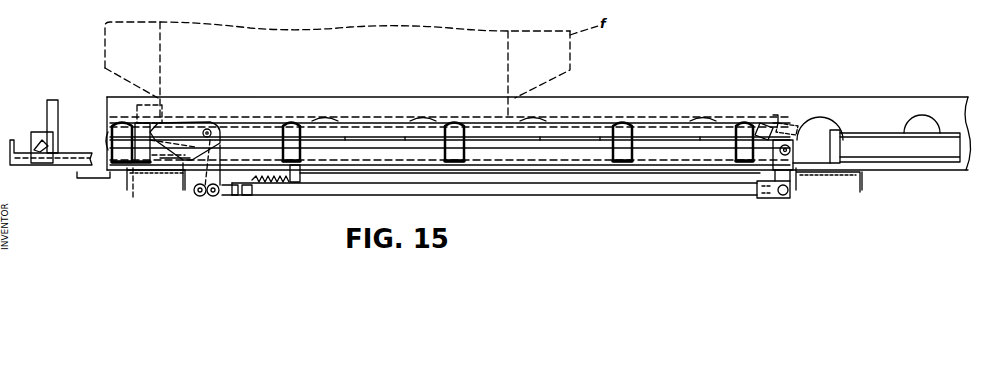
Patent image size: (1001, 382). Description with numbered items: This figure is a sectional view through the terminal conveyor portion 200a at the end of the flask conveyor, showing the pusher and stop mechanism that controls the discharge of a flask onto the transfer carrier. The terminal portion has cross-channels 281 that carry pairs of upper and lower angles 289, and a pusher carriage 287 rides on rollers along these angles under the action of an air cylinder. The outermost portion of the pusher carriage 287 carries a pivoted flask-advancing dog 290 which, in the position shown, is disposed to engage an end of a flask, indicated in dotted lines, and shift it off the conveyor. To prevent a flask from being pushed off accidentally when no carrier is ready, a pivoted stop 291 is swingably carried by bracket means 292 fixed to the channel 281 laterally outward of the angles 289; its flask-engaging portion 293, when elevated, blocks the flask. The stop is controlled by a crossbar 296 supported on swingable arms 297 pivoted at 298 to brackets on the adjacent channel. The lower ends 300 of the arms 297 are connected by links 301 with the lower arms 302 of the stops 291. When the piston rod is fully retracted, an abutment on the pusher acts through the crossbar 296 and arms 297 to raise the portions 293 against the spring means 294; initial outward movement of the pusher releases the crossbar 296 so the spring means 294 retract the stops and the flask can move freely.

The terminal conveyor portion 200a is at (318, 94).
The cross-channels 281 is at (150, 173).
The pusher carriage 287 is at (65, 168).
The upper and lower angles 289 is at (388, 150).
The flask-advancing dog 290 is at (53, 100).
The pivoted stops 291 is at (163, 156).
The bracket means 292 is at (175, 122).
The flask-engaging portions 293 is at (156, 120).
The spring means 294 is at (268, 183).
The crossbar 296 is at (767, 126).
The swingable arms 297 is at (785, 140).
The pivot 298 is at (800, 140).
The lower ends of the pivoted arms 300 is at (786, 174).
The links 301 is at (517, 188).
The lower arms of the pivoted stops 302 is at (221, 182).